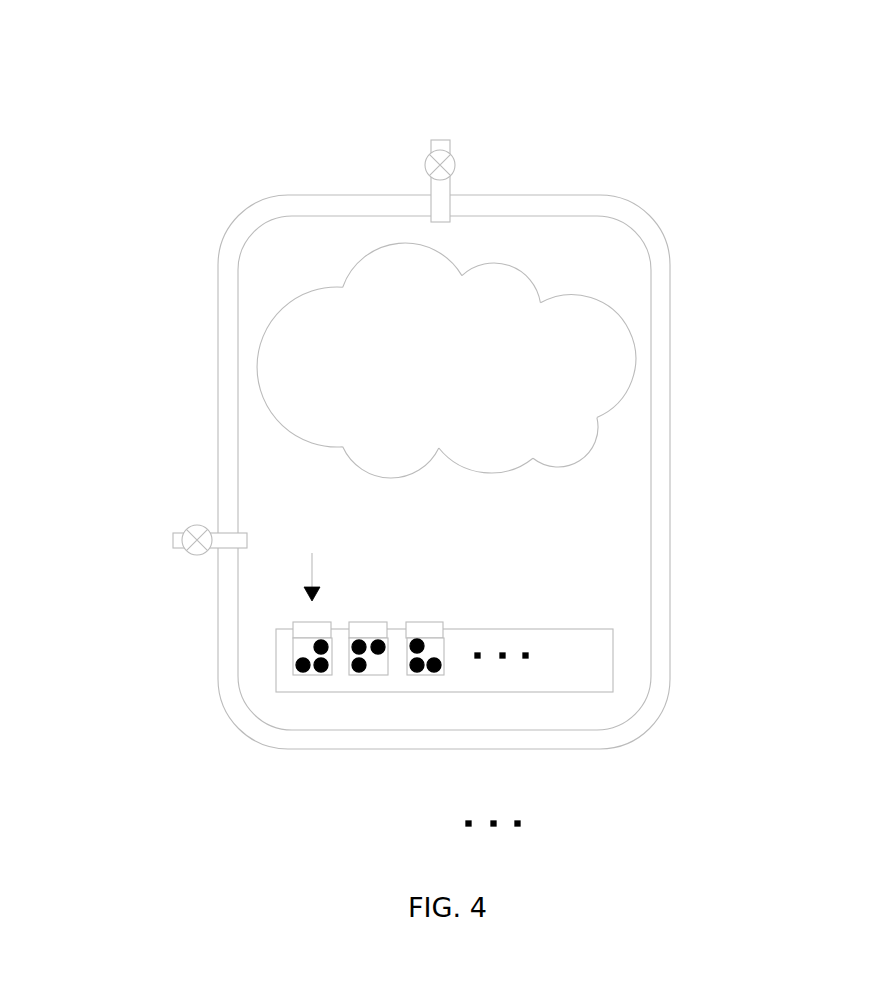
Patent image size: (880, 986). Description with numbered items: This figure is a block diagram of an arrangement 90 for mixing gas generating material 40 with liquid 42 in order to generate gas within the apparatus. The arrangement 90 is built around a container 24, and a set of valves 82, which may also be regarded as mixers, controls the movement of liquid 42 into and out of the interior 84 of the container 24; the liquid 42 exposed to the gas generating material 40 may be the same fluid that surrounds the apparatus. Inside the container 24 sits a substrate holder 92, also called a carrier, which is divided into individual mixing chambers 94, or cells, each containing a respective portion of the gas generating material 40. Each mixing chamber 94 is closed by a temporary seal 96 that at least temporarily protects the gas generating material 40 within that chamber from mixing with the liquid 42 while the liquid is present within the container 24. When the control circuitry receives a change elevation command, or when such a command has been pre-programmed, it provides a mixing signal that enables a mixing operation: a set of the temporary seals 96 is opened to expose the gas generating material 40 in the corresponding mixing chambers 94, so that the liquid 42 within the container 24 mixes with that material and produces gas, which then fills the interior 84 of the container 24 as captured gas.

The arrangement 90 is at (56, 58).
The set of valves 82 is at (302, 103).
The container 24 is at (660, 618).
The interior 84 is at (308, 277).
The gas generating material 40 is at (526, 367).
The liquid 42 is at (312, 568).
The substrate holder 92 is at (576, 640).
The mixing chambers 94 is at (351, 687).
The temporary seal 96 is at (322, 622).